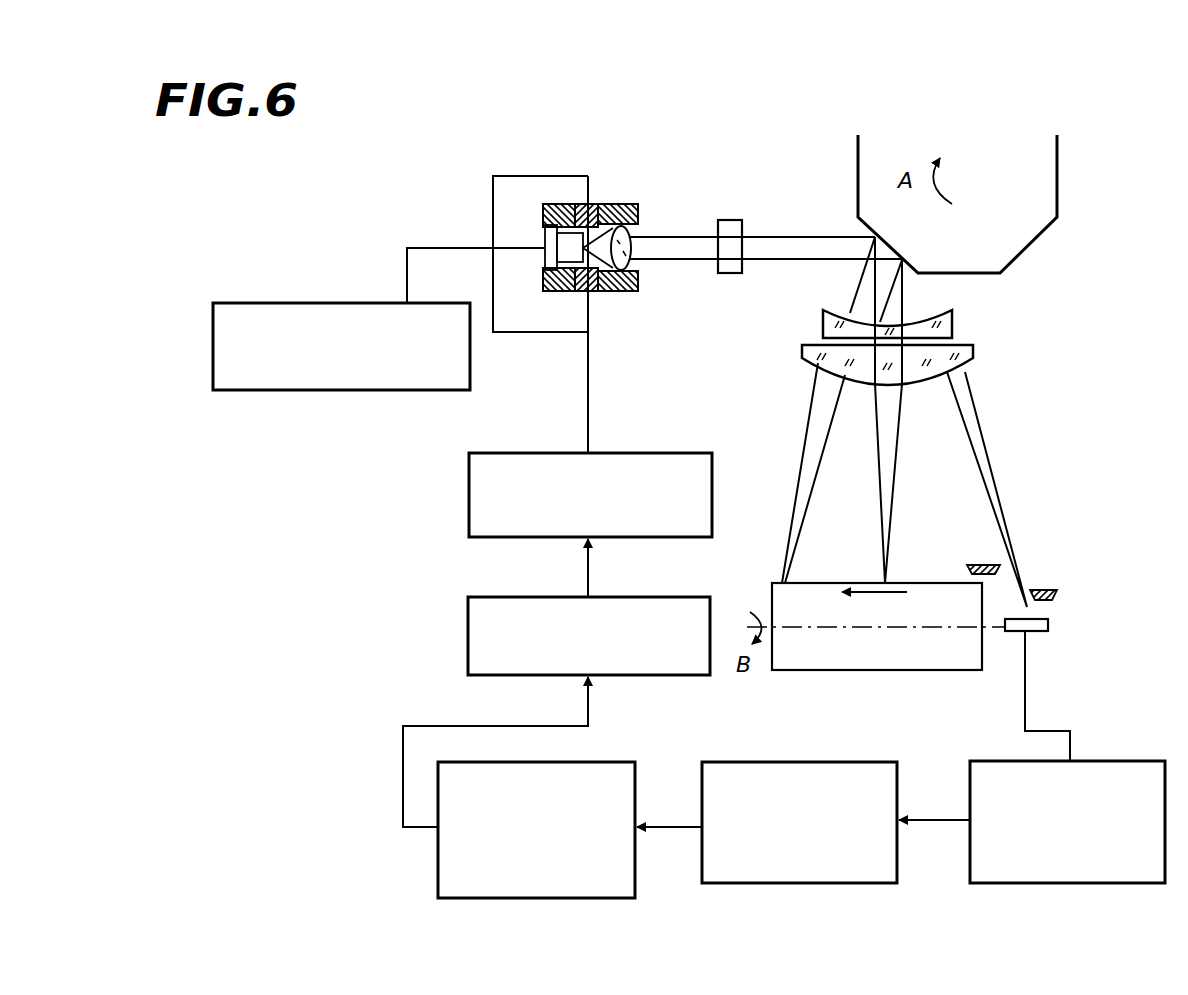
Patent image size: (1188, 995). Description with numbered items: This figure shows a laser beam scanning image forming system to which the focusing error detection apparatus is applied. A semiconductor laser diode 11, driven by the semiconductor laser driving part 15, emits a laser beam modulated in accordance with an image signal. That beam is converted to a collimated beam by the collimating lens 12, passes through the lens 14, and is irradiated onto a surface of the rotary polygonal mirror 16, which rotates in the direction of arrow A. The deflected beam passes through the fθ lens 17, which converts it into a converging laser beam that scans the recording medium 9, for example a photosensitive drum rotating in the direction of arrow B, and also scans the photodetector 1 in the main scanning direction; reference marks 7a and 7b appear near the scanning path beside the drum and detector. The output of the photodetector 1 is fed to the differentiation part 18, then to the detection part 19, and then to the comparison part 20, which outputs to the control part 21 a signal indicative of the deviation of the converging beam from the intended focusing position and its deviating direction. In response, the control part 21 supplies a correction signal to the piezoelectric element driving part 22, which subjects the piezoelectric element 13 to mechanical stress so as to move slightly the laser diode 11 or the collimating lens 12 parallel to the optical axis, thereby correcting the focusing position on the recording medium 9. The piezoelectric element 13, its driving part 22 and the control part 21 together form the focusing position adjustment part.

The photodetector 1 is at (1050, 626).
The first reference mark 7a is at (1045, 590).
The second reference mark 7b is at (978, 565).
The recording medium 9 is at (818, 583).
The semiconductor laser diode 11 is at (545, 245).
The collimating lens 12 is at (633, 248).
The piezoelectric element 13 is at (592, 292).
The lens 14 is at (735, 220).
The semiconductor laser driving part 15 is at (245, 303).
The rotary polygonal mirror 16 is at (1040, 237).
The fθ lens 17 is at (988, 305).
The differentiation part 18 is at (1005, 883).
The detection part 19 is at (780, 884).
The comparison part 20 is at (512, 898).
The control part 21 is at (642, 597).
The piezoelectric element driving part 22 is at (633, 453).